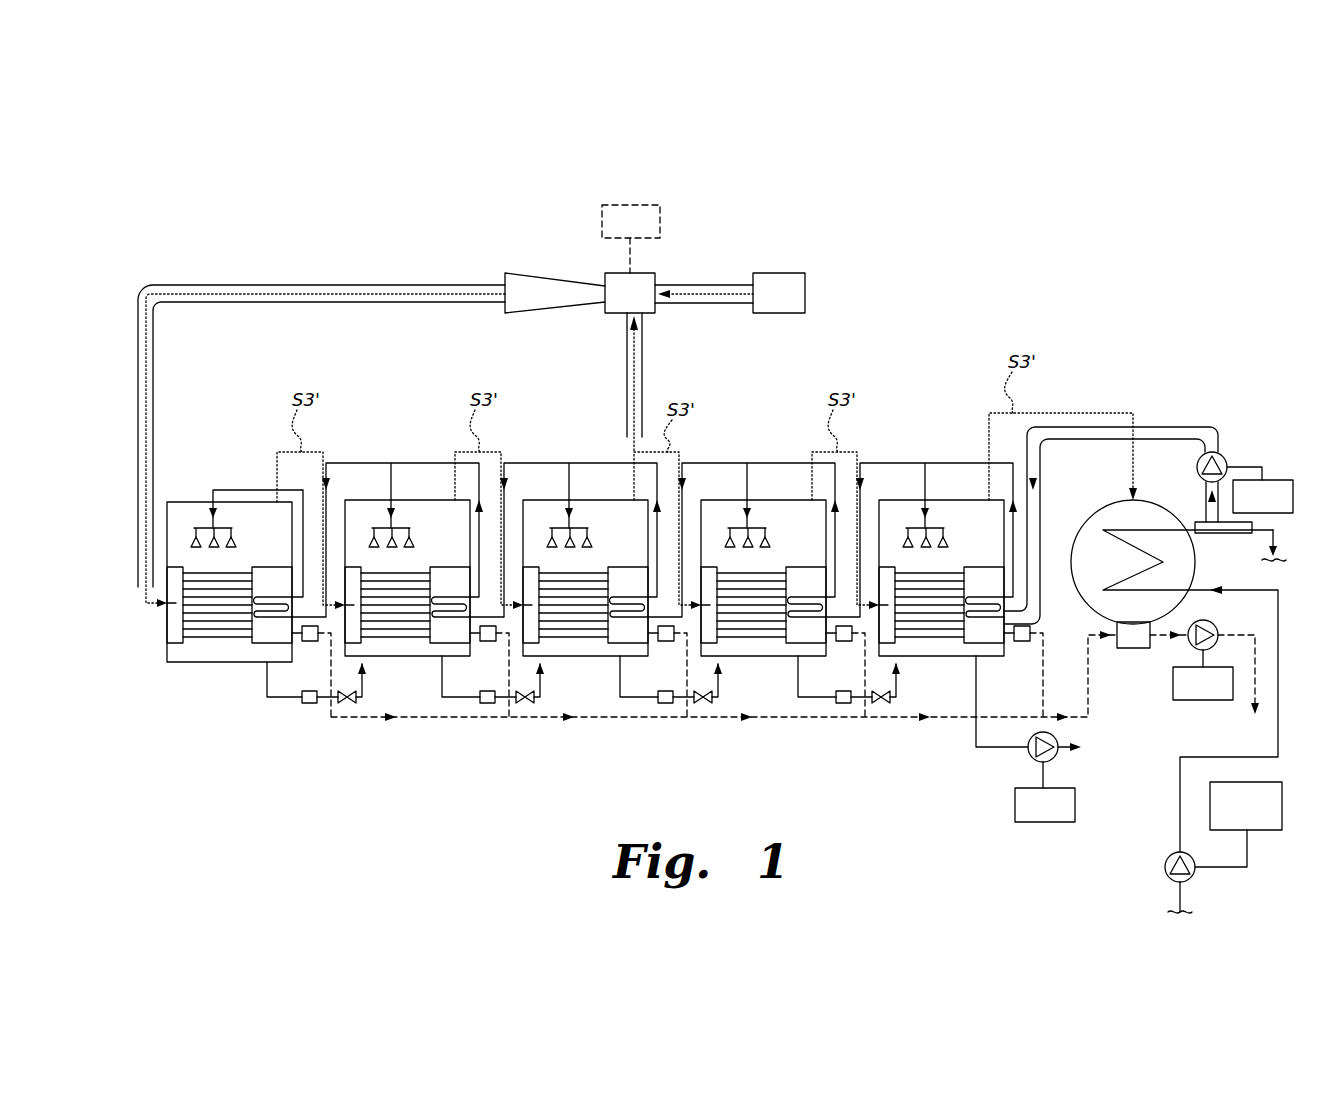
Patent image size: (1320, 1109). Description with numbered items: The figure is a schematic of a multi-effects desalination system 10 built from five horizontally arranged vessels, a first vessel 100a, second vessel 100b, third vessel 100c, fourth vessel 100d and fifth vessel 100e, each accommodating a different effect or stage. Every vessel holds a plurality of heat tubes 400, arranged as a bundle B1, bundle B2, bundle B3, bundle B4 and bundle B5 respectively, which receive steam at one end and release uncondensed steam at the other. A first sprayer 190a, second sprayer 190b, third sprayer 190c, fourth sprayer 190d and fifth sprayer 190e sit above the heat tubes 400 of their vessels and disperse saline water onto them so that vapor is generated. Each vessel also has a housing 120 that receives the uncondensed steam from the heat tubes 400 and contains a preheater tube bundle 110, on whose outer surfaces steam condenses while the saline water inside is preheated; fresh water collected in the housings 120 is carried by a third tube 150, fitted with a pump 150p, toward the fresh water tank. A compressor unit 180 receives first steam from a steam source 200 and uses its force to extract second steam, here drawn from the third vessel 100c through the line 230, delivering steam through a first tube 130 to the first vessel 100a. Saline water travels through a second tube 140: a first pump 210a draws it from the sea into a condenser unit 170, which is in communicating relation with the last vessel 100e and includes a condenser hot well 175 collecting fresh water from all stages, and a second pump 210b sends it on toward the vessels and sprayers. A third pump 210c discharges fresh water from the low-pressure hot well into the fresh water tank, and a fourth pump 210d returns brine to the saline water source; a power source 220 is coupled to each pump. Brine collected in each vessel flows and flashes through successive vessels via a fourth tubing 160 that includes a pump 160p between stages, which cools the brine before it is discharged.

The multi-effects desalination system 10 is at (193, 155).
The first tube 130 is at (366, 265).
The compressor unit 180 is at (630, 293).
The steam source 200 is at (706, 260).
The power source 220 is at (947, 517).
The steam line S2 230 is at (627, 363).
The second tube 140 is at (1162, 426).
The condenser unit 170 is at (1120, 500).
The condenser hot well 175 is at (1133, 650).
The first pump 210a is at (1165, 872).
The second pump 210b is at (1228, 455).
The third pump 210c is at (1205, 621).
The fourth pump 210d is at (1053, 758).
The first vessel 100a is at (186, 664).
The second vessel 100b is at (389, 658).
The third vessel 100c is at (567, 658).
The fourth vessel 100d is at (745, 658).
The fifth vessel 100e is at (923, 658).
The first sprayer 190a is at (195, 530).
The second sprayer 190b is at (373, 528).
The third sprayer 190c is at (551, 528).
The fourth sprayer 190d is at (729, 528).
The fifth sprayer 190e is at (907, 528).
The housing 120 is at (253, 567).
The preheater tube bundle 110 is at (262, 597).
The heat tubes 400 is at (193, 573).
The third tube 150 is at (745, 720).
The pump 150p is at (310, 642).
The fourth tubing 160 is at (287, 698).
The pump 160p is at (309, 704).
The bundle B1 is at (193, 551).
The bundle B2 is at (361, 557).
The bundle B3 is at (539, 557).
The bundle B4 is at (717, 557).
The bundle B5 is at (893, 557).